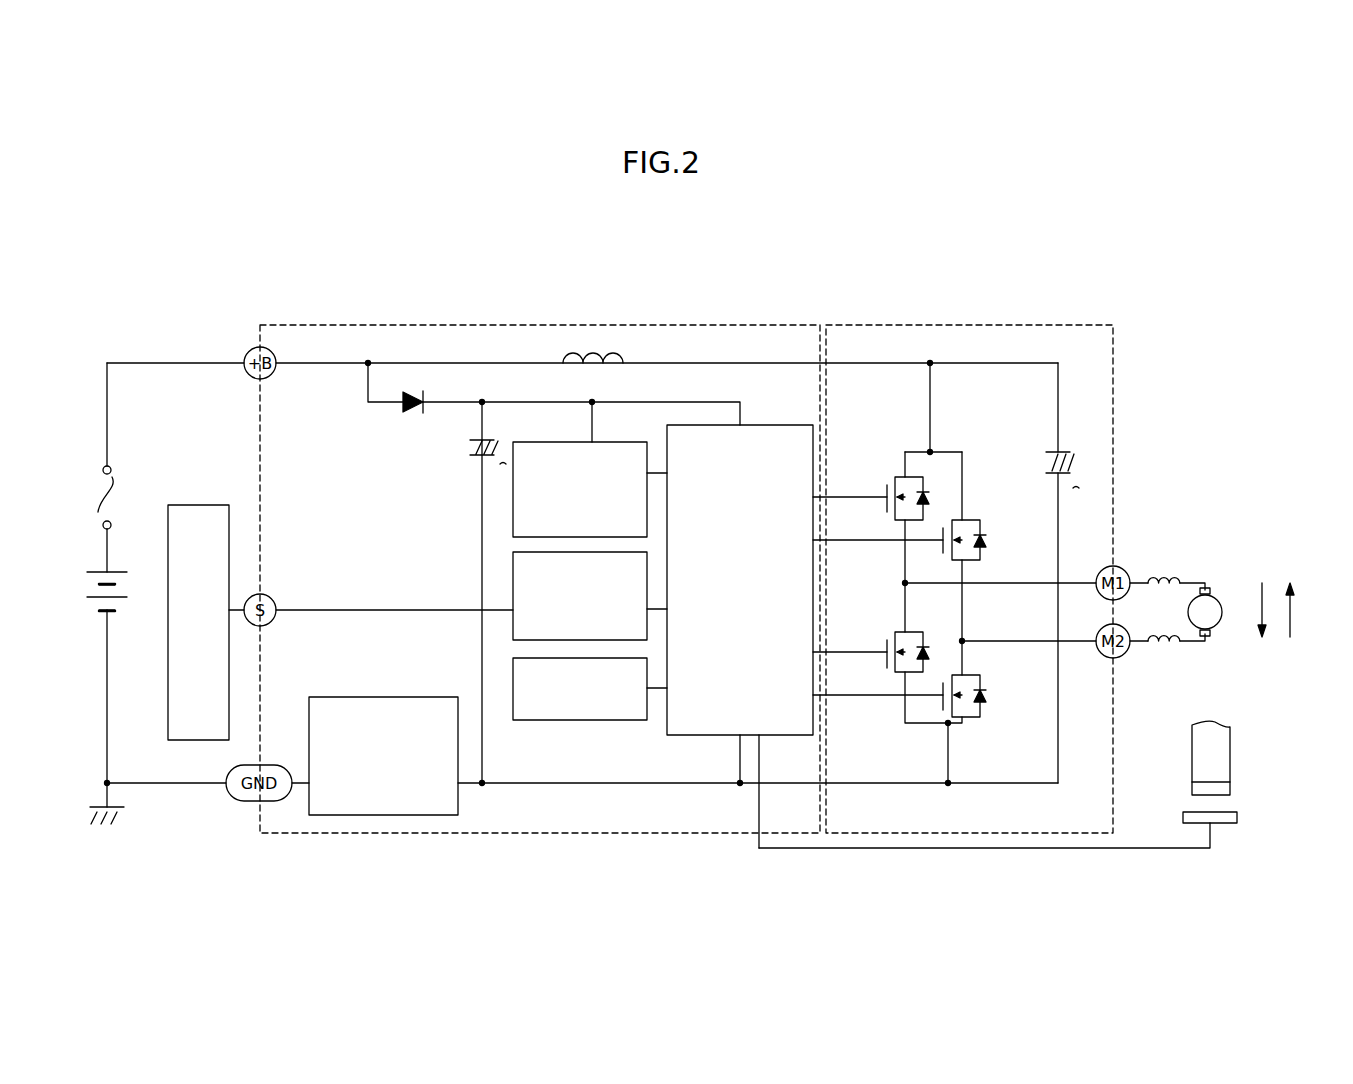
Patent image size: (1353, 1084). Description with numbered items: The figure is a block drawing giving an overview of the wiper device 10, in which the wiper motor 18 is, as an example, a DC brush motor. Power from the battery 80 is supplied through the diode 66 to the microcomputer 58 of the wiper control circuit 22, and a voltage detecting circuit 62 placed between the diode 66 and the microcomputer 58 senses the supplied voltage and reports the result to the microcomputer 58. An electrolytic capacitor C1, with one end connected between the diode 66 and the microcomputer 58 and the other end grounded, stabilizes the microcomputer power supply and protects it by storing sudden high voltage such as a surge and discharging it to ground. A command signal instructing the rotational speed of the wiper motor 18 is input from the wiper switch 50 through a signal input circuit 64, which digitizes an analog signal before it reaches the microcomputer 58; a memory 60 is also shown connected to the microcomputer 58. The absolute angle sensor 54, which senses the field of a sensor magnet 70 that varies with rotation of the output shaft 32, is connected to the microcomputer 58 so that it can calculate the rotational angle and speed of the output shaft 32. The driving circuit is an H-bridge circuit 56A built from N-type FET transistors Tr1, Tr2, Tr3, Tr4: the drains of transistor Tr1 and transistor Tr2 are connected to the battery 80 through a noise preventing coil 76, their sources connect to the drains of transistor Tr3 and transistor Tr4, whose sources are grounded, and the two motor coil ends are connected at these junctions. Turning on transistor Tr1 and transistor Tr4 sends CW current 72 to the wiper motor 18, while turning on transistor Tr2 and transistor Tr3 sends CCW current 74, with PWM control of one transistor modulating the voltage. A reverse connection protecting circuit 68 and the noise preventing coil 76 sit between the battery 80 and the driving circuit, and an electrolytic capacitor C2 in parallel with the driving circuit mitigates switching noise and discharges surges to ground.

The wiper device 10 is at (1072, 268).
The wiper control circuit 22 is at (753, 318).
The H-bridge circuit 56A is at (948, 438).
The battery 80 is at (93, 568).
The wiper switch 50 is at (203, 504).
The diode 66 is at (405, 409).
The electrolytic capacitor C1 is at (468, 594).
The noise preventing coil 76 is at (612, 345).
The voltage detecting circuit 62 is at (513, 493).
The signal input circuit 64 is at (513, 620).
The memory 60 is at (513, 672).
The microcomputer 58 is at (772, 425).
The reverse connection protecting circuit 68 is at (383, 697).
The transistor Tr1 is at (893, 473).
The transistor Tr2 is at (988, 518).
The transistor Tr3 is at (893, 630).
The transistor Tr4 is at (988, 717).
The electrolytic capacitor C2 is at (1076, 470).
The wiper motor 18 is at (1222, 633).
The CW current 72 is at (1258, 615).
The CCW current 74 is at (1293, 614).
The output shaft 32 is at (1232, 752).
The sensor magnet 70 is at (1232, 790).
The absolute angle sensor 54 is at (1238, 815).